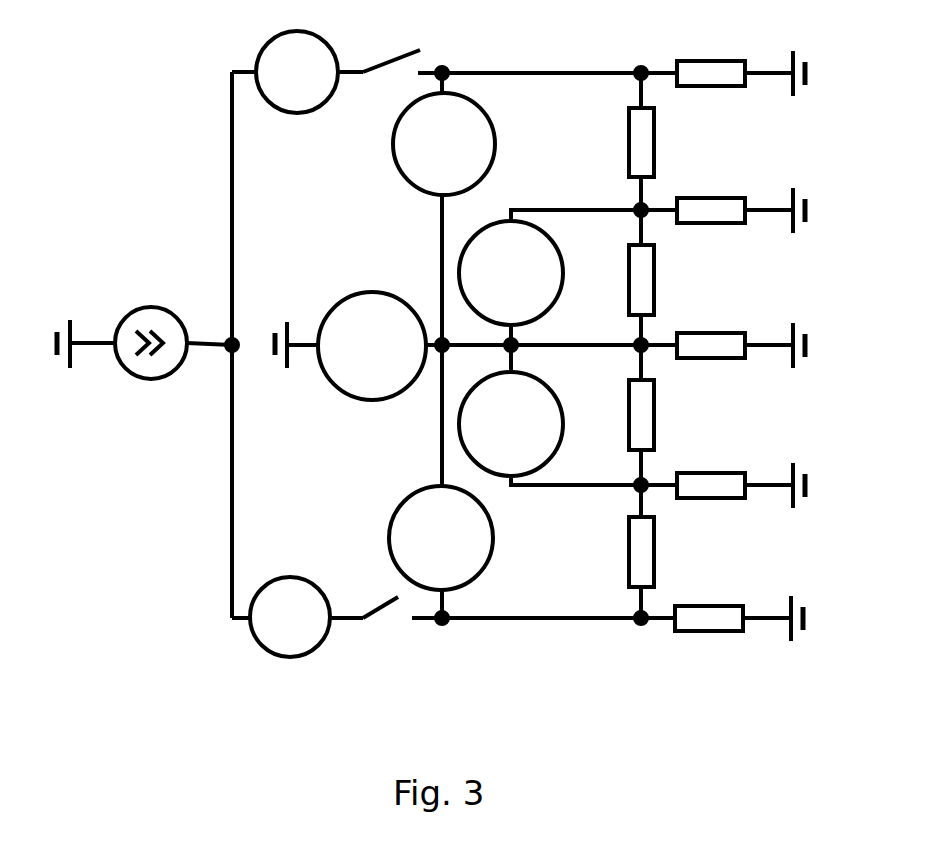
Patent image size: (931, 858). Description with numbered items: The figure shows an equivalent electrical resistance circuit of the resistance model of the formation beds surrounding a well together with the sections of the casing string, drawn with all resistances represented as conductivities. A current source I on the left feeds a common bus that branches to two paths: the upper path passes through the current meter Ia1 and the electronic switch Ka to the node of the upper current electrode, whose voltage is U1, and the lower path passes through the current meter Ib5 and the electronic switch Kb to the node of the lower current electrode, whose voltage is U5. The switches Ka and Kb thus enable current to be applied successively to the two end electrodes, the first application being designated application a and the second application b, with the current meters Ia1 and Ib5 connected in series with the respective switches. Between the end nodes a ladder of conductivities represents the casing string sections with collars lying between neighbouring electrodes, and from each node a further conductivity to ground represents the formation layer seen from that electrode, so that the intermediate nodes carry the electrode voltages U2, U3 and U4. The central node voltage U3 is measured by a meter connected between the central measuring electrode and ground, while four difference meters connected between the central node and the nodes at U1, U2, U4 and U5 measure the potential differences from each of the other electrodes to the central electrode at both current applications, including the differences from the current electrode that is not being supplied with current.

The current source I is at (147, 343).
The current meter Ia1 is at (285, 72).
The current meter Ib5 is at (281, 617).
The electronic switch Ka is at (390, 39).
The electronic switch Kb is at (386, 641).
The voltage across electrode 1 U1 is at (556, 47).
The voltage across electrode 2 U2 is at (626, 183).
The voltage across electrode 3 U3 is at (476, 344).
The voltage across electrode 4 U4 is at (624, 459).
The voltage across electrode 5 U5 is at (556, 599).